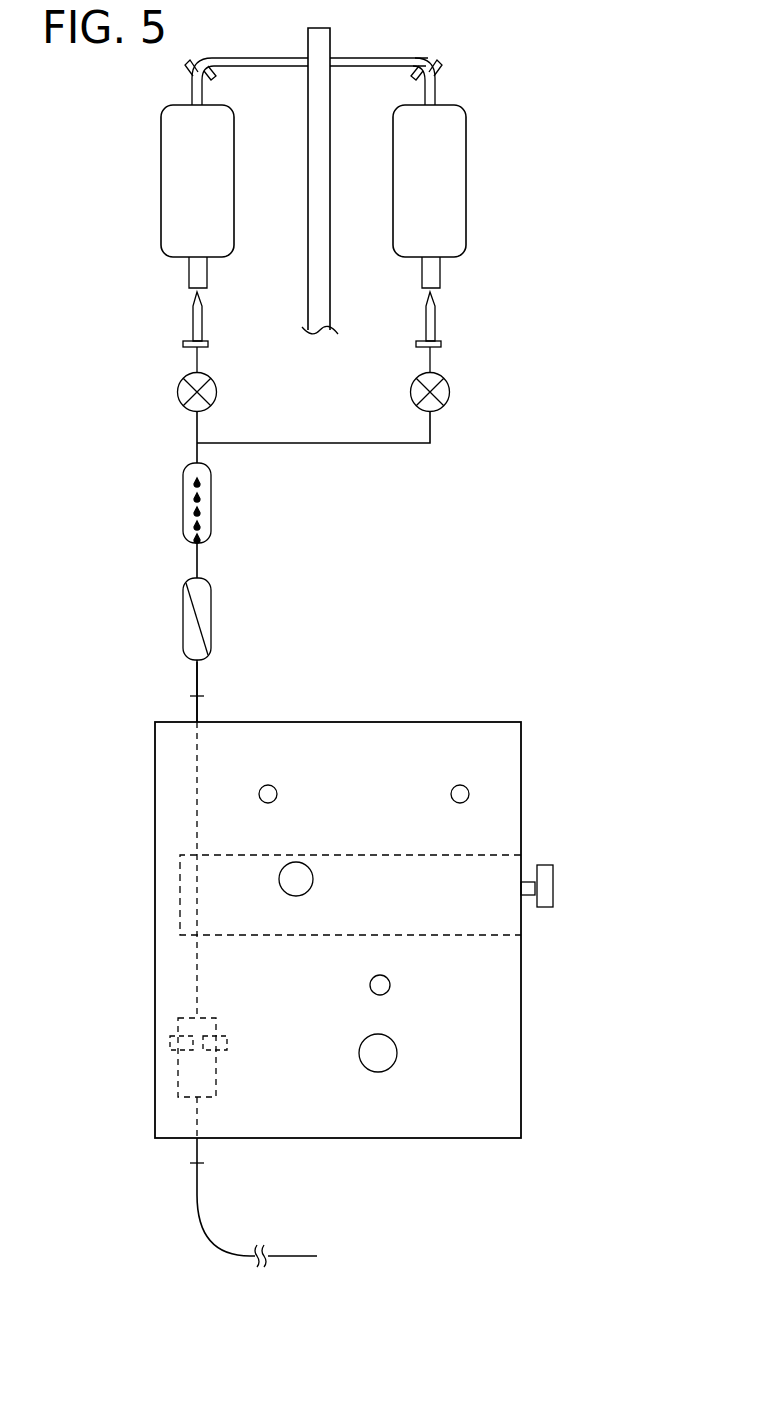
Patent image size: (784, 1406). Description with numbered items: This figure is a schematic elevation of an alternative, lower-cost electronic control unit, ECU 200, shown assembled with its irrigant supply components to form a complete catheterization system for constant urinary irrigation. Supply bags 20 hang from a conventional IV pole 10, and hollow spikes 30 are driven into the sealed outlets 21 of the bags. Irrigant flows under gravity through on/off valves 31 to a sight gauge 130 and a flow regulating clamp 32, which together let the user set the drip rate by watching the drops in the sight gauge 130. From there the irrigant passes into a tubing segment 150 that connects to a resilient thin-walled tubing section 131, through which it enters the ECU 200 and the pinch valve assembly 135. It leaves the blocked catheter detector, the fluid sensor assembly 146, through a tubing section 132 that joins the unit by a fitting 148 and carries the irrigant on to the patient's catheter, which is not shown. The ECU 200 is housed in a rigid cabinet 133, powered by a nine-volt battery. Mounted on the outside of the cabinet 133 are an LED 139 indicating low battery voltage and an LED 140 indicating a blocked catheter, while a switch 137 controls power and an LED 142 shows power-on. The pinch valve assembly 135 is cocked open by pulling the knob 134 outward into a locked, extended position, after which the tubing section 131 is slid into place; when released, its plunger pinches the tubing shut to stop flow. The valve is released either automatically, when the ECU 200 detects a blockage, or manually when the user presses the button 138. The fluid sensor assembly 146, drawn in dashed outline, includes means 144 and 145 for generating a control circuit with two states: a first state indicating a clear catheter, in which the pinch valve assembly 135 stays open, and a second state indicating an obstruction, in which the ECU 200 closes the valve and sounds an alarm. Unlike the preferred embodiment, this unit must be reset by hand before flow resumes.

The IV pole 10 is at (330, 38).
The supply bags 20 is at (161, 189).
The sealed outlets 21 is at (207, 268).
The hollow spikes 30 is at (202, 316).
The on/off valves 31 is at (216, 392).
The sight gauge 130 is at (211, 500).
The flow regulating clamp 32 is at (211, 618).
The tubing segment 150 is at (197, 678).
The resilient thin-walled tubing section 131 is at (197, 712).
The cabinet 133 is at (521, 753).
The LED 139 is at (277, 795).
The LED 140 is at (469, 797).
The pinch valve assembly 135 is at (180, 895).
The button 138 is at (281, 872).
The knob 134 is at (553, 886).
The electronic control unit 200 is at (594, 837).
The LED 142 is at (390, 985).
The switch 137 is at (397, 1053).
The means for generating a control circuit 144 is at (170, 1040).
The means for generating a control circuit 145 is at (227, 1043).
The fluid sensor assembly 146 is at (178, 1068).
The fitting 148 is at (195, 1152).
The tubing section 132 is at (203, 1212).